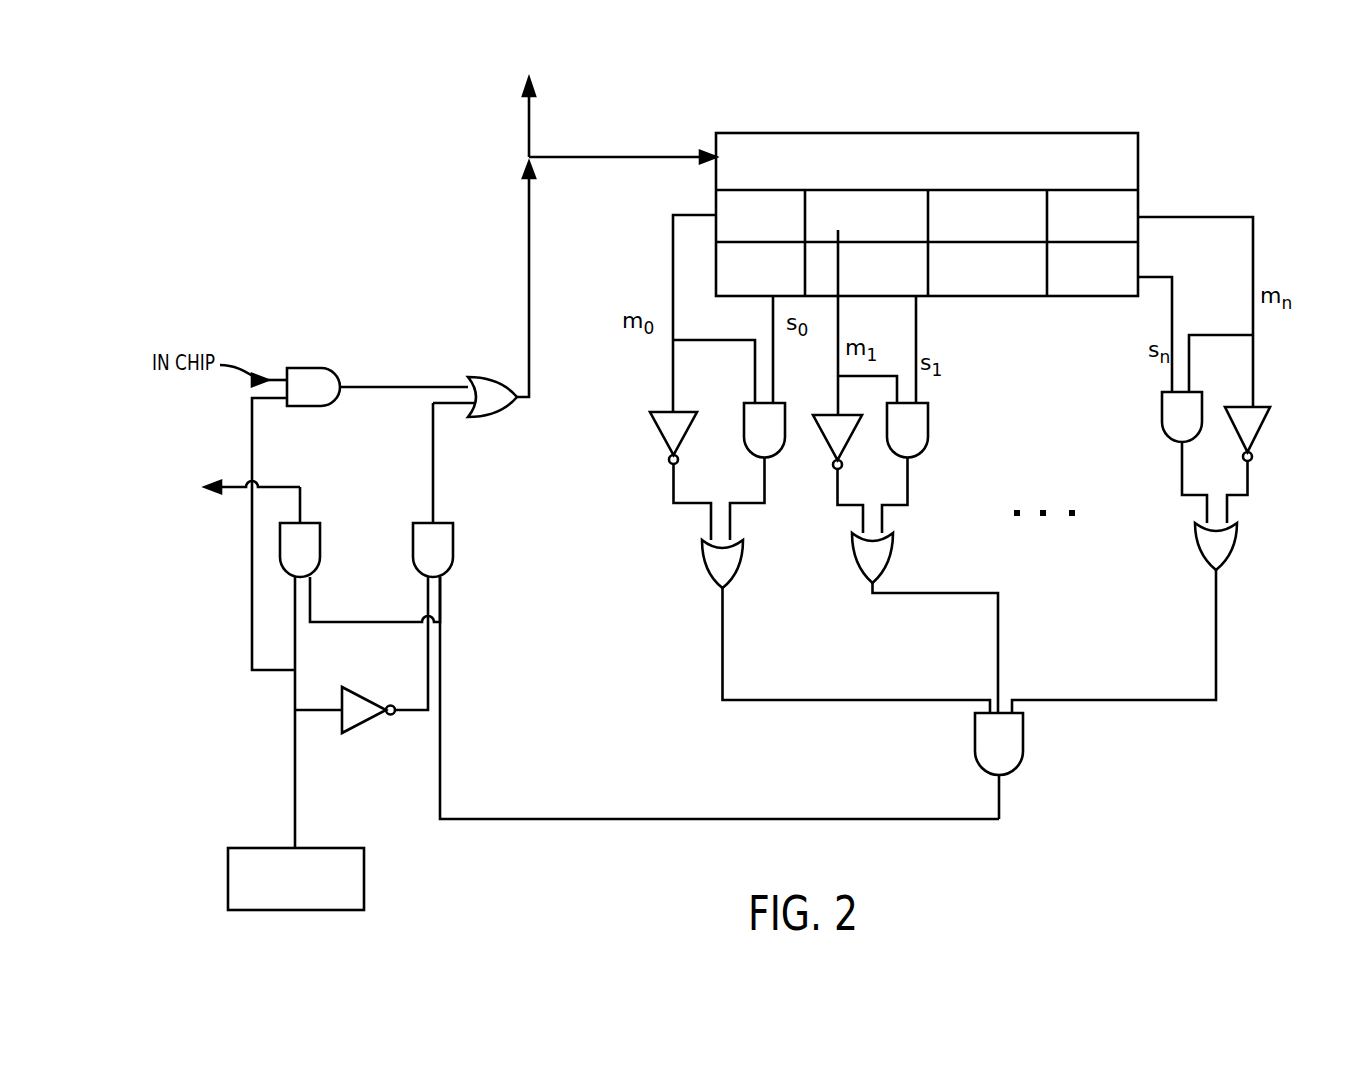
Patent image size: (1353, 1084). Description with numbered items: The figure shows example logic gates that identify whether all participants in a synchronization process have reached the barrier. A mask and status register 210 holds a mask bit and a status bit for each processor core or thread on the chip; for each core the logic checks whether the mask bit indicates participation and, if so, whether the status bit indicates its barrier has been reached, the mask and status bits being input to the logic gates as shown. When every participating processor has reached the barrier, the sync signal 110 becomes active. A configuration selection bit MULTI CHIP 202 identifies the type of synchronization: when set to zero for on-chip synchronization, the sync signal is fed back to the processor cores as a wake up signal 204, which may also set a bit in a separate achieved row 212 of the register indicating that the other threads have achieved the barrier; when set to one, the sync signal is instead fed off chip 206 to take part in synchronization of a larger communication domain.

The sync signal 110 is at (1000, 810).
The configuration selection bit "MULTI CHIP" 202 is at (364, 885).
The wake up signal 204 is at (527, 147).
The off chip 206 is at (237, 489).
The mask and status register 210 is at (990, 296).
The achieved row 212 is at (1138, 163).